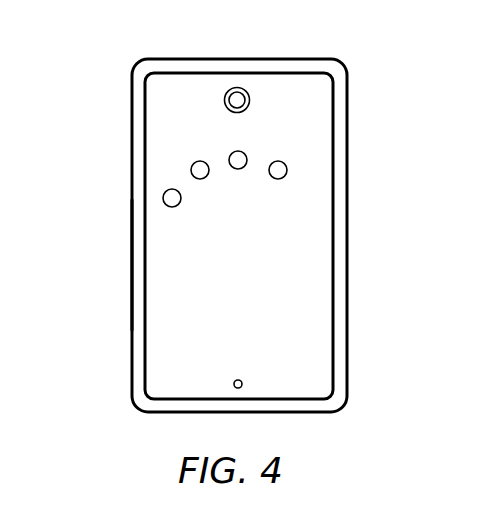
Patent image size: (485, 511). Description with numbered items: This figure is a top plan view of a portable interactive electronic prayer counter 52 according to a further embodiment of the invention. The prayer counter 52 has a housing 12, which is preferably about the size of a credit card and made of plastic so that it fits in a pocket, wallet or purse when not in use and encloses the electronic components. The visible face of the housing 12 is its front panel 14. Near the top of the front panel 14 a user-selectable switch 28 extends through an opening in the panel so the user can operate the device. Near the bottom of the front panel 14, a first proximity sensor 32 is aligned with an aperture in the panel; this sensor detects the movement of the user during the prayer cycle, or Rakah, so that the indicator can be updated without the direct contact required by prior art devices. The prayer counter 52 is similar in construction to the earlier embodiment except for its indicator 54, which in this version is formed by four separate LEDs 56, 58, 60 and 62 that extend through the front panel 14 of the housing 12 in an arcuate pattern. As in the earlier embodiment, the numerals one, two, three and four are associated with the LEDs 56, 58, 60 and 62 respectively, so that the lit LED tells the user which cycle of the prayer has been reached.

The housing 12 is at (131, 270).
The front panel 14 is at (308, 257).
The user-selectable switch 28 is at (237, 98).
The first proximity sensor 32 is at (236, 380).
The portable interactive electronic prayer counter 52 is at (113, 71).
The indicator 54 is at (220, 188).
The LED 56 is at (172, 198).
The LED 58 is at (200, 170).
The LED 60 is at (238, 160).
The LED 62 is at (285, 163).